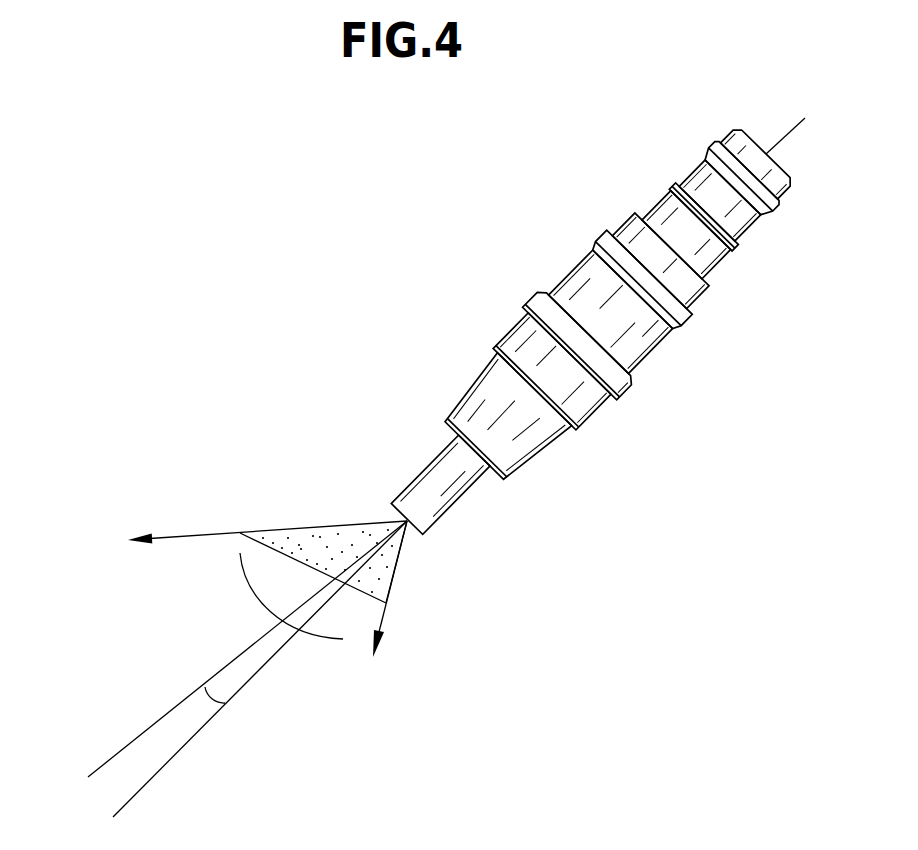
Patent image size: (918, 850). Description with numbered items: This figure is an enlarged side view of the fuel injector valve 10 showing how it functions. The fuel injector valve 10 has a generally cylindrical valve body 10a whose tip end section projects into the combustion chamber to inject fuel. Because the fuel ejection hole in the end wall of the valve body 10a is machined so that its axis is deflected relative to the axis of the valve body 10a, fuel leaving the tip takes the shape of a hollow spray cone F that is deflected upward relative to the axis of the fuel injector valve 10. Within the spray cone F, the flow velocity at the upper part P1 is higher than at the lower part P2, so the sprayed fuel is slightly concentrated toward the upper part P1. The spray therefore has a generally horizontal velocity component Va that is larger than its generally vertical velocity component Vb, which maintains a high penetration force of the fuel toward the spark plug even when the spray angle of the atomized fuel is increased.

The fuel injector valve 10 is at (580, 412).
The valve body 10a is at (410, 500).
The spray cone F is at (316, 504).
The horizontal velocity component Va is at (187, 535).
The vertical velocity component Vb is at (382, 622).
The upper part of the spray cone P1 is at (273, 533).
The lower part of the spray cone P2 is at (392, 586).